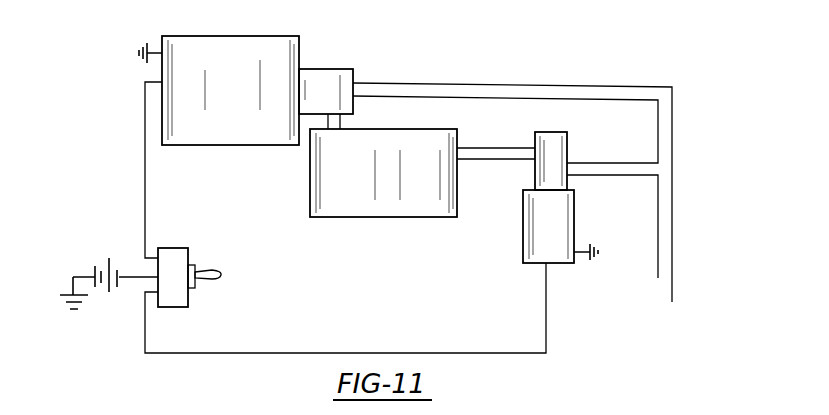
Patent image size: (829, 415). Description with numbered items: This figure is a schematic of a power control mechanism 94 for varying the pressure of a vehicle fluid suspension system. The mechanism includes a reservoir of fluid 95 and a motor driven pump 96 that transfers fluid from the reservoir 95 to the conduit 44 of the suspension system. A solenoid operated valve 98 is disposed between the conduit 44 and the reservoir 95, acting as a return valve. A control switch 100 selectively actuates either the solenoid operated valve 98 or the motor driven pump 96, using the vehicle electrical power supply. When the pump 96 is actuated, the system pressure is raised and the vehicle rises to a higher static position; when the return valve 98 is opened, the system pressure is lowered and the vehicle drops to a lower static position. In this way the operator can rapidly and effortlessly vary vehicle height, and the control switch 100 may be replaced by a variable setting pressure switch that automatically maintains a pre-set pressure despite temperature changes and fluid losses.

The conduit 44 is at (665, 208).
The power control mechanism 94 is at (520, 75).
The reservoir of fluid 95 is at (378, 220).
The motor driven pump 96 is at (325, 73).
The solenoid operated valve 98 is at (537, 170).
The control switch 100 is at (176, 248).